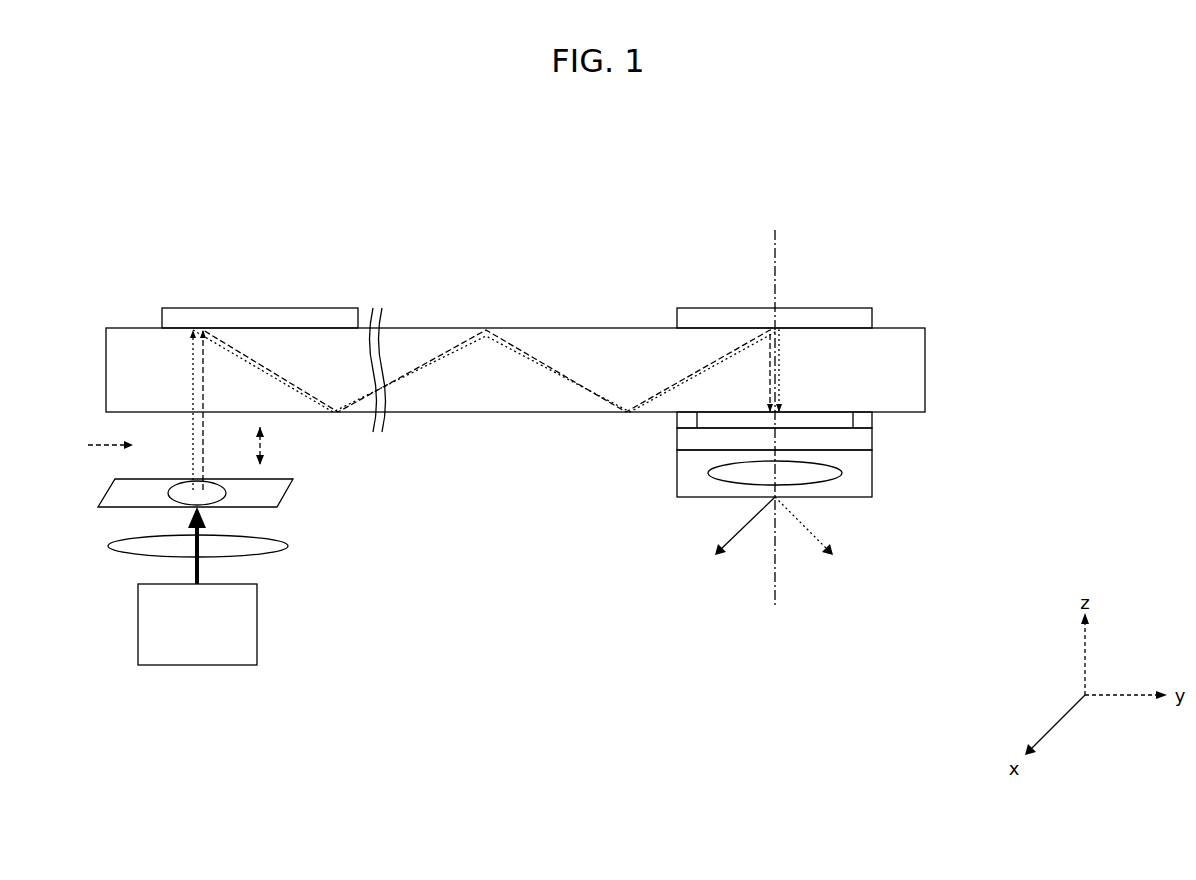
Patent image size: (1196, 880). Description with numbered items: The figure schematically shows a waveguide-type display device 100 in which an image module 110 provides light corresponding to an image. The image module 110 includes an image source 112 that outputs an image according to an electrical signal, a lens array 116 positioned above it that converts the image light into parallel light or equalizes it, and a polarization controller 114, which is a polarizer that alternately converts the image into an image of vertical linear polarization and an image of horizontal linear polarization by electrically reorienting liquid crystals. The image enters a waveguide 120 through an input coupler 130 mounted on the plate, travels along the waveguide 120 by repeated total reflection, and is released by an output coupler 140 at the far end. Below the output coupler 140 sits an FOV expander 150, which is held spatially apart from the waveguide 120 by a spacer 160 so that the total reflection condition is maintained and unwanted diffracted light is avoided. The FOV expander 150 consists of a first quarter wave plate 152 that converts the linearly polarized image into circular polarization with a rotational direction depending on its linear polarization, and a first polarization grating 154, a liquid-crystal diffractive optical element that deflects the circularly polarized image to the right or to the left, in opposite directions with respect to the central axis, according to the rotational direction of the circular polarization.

The waveguide-type display device 100 is at (943, 305).
The image module 110 is at (267, 572).
The image source 112 is at (380, 490).
The polarization controller 114 is at (293, 492).
The lens array 116 is at (288, 546).
The waveguide 120 is at (925, 370).
The input coupler 130 is at (268, 306).
The output coupler 140 is at (822, 306).
The FOV expander 150 is at (852, 478).
The first ¼ wave plate 152 is at (874, 448).
The first polarization grating 154 is at (874, 482).
The spacer 160 is at (873, 418).